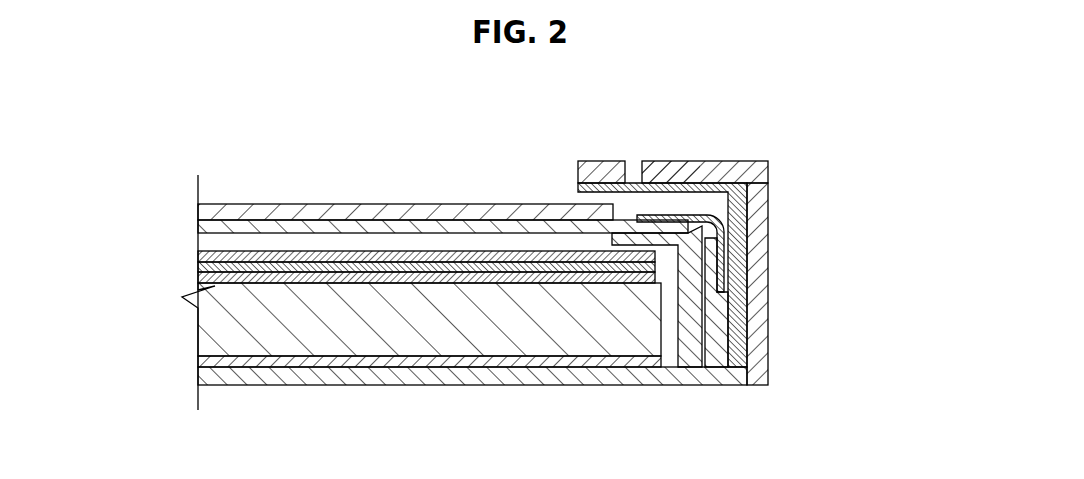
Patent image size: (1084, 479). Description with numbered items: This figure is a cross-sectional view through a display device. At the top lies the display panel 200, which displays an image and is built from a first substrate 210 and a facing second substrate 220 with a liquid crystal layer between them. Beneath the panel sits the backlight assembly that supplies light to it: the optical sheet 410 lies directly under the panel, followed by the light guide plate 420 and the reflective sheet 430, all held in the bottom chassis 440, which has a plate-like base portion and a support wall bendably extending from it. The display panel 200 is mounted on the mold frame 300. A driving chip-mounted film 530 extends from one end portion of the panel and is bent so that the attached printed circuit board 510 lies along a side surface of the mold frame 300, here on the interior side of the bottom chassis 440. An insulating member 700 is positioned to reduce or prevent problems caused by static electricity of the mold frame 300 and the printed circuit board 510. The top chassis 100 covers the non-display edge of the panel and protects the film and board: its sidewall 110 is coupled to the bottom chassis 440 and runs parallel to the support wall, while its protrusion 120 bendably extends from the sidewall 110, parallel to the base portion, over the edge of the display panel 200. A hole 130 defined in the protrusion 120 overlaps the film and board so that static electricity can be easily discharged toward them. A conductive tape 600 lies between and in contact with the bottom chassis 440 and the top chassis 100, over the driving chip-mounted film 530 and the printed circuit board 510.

The top chassis 100 is at (742, 247).
The sidewall 110 is at (793, 284).
The protrusion 120 is at (706, 170).
The hole 130 is at (633, 162).
The display panel 200 is at (443, 164).
The first substrate 210 is at (272, 140).
The second substrate 220 is at (267, 214).
The mold frame 300 is at (688, 352).
The optical sheet 410 is at (195, 251).
The light guide plate 420 is at (217, 318).
The reflective sheet 430 is at (208, 360).
The bottom chassis 440 is at (205, 378).
The printed circuit board 510 is at (727, 297).
The driving chip-mounted film 530 is at (731, 262).
The conductive tape 600 is at (665, 162).
The insulating member 700 is at (737, 339).